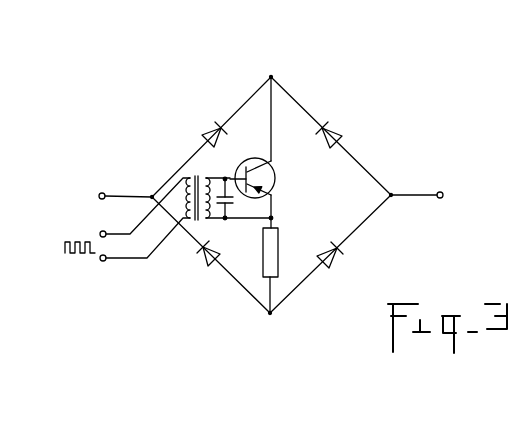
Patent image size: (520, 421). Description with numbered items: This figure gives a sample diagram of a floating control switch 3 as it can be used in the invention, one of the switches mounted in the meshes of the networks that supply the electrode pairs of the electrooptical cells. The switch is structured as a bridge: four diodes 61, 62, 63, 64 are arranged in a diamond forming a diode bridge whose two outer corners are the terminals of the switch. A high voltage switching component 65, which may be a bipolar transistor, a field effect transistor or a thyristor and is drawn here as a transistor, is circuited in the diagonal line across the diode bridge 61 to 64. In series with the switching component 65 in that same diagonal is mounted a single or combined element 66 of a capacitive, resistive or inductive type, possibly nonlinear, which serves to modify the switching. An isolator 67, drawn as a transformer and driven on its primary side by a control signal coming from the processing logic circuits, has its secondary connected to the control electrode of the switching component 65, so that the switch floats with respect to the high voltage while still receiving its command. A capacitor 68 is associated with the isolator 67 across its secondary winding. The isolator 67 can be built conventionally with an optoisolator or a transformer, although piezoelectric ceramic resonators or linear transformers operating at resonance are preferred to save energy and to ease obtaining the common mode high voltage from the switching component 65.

The floating control switch 3 is at (383, 168).
The diode 61 is at (207, 130).
The diode 62 is at (339, 130).
The diode 63 is at (338, 255).
The diode 64 is at (208, 266).
The high voltage switching component 65 is at (276, 178).
The single or combined element 66 is at (279, 247).
The isolator 67 is at (198, 170).
The capacitor 68 is at (231, 211).